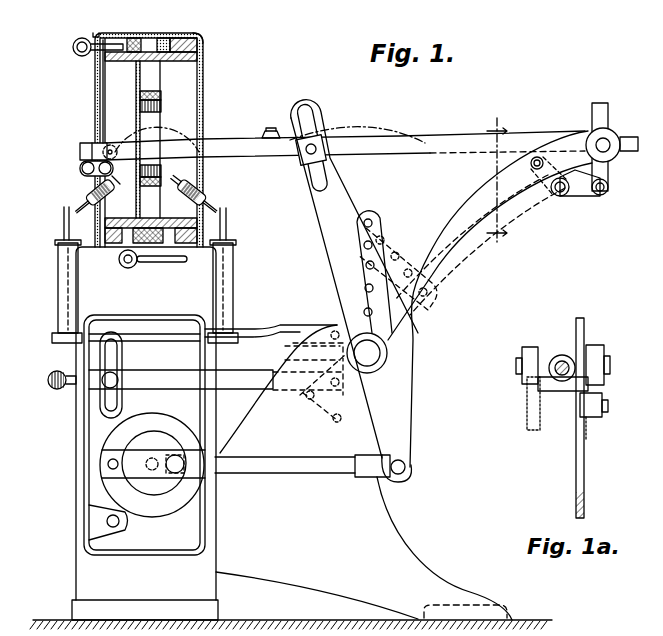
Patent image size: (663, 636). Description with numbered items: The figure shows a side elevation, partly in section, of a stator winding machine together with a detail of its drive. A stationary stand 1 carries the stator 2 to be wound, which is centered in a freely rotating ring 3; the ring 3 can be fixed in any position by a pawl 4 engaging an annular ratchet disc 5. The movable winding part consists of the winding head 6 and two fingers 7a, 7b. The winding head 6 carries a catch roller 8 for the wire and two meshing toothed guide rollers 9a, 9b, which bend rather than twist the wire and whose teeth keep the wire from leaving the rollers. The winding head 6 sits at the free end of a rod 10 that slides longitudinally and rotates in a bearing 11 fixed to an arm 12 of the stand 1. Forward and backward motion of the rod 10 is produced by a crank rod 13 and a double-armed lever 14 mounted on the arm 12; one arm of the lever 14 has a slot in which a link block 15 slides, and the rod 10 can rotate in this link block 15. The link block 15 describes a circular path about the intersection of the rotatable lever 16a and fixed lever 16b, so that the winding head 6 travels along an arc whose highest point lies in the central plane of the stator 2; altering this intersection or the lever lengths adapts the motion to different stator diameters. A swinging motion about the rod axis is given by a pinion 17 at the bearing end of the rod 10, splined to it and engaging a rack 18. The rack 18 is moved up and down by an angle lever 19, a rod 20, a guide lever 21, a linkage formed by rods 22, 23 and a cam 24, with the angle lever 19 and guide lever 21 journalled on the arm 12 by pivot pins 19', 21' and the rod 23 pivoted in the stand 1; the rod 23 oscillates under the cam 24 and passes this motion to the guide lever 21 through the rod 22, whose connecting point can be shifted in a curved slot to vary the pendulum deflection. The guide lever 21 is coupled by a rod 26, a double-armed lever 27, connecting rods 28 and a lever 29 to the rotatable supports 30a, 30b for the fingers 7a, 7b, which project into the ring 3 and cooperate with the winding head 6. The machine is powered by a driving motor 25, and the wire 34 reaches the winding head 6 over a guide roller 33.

In FIG. 1, the stationary stand 1 is at (82, 565).
In FIG. 1, the stator 2 is at (160, 95).
In FIG. 1, the ring 3 is at (202, 38).
In FIG. 1, the pawl 4 is at (76, 52).
In FIG. 1, the annular ratchet disc 5 is at (93, 34).
In FIG. 1, the winding head 6 is at (92, 148).
In FIG. 1, the finger 7a is at (92, 190).
In FIG. 1, the finger 7b is at (178, 178).
In FIG. 1, the catch roller 8 is at (112, 145).
In FIG. 1, the toothed guide roller 9a is at (82, 167).
In FIG. 1, the toothed guide roller 9b is at (118, 180).
In FIG. 1, the rod 10 is at (472, 137).
In FIG. 1A, the rod 10 is at (556, 373).
In FIG. 1, the bearing 11 is at (607, 139).
In FIG. 1A, the bearing 11 is at (605, 355).
In FIG. 1, the arm 12 is at (413, 332).
In FIG. 1A, the arm 12 is at (532, 440).
In FIG. 1, the crank rod 13 is at (289, 469).
In FIG. 1, the double-armed lever 14 is at (400, 433).
In FIG. 1, the link block 15 is at (309, 162).
In FIG. 1, the rotatable lever 16a is at (350, 193).
In FIG. 1, the fixed lever 16b is at (400, 312).
In FIG. 1A, the pinion 17 is at (558, 330).
In FIG. 1, the rack 18 is at (599, 118).
In FIG. 1A, the rack 18 is at (585, 331).
In FIG. 1, the angle lever 19 is at (589, 202).
In FIG. 1A, the angle lever 19 is at (572, 434).
In FIG. 1, the pivot pin 19' is at (554, 190).
In FIG. 1, the rod 20 is at (462, 257).
In FIG. 1A, the rod 20 is at (574, 495).
In FIG. 1, the guide lever 21 is at (291, 354).
In FIG. 1, the pivot pin 21' is at (294, 425).
In FIG. 1, the rod 22 is at (233, 384).
In FIG. 1, the rod 23 is at (104, 429).
In FIG. 1, the cam 24 is at (165, 440).
In FIG. 1, the driving motor 25 is at (165, 509).
In FIG. 1, the rod 26 is at (295, 328).
In FIG. 1, the double-armed lever 27 is at (218, 325).
In FIG. 1, the connecting rods 28 is at (152, 338).
In FIG. 1, the lever 29 is at (58, 336).
In FIG. 1, the rotatable support 30a is at (60, 281).
In FIG. 1, the rotatable support 30b is at (232, 275).
In FIG. 1, the guide roller 33 is at (272, 129).
In FIG. 1, the wire 34 is at (218, 138).